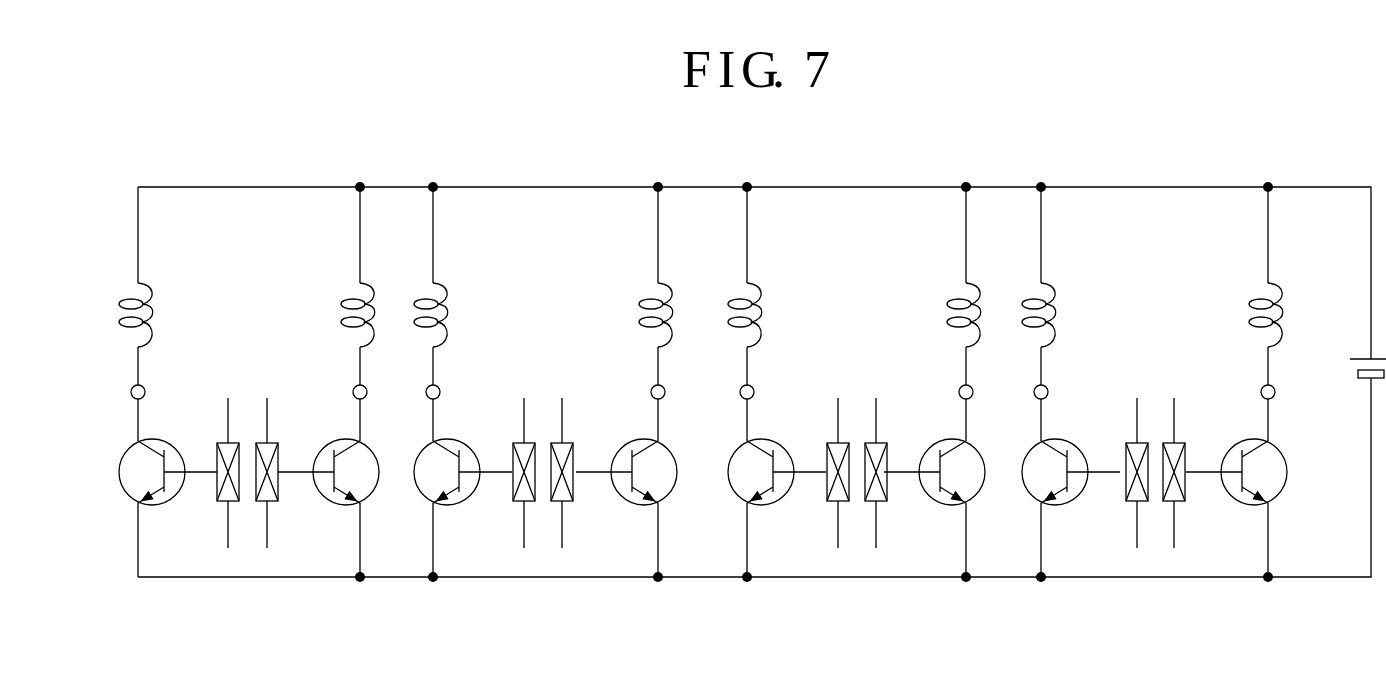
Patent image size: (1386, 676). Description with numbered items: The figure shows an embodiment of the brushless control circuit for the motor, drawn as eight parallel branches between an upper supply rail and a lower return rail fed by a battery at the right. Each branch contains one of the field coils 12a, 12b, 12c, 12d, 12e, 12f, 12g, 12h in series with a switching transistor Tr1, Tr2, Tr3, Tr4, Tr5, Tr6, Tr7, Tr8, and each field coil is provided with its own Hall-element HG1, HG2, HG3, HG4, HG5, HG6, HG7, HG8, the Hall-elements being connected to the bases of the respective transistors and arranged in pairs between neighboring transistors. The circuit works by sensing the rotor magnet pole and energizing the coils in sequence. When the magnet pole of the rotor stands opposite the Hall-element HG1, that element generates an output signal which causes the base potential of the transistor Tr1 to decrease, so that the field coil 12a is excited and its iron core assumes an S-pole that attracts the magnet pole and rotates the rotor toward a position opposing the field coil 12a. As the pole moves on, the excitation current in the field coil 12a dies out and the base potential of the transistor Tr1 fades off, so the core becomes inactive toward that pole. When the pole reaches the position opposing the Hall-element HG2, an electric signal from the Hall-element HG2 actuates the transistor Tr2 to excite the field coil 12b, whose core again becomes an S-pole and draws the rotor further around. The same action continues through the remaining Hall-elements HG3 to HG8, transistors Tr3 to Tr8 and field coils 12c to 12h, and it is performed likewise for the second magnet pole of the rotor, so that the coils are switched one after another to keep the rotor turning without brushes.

The field coil 12a is at (164, 315).
The field coil 12b is at (328, 315).
The field coil 12c is at (459, 315).
The field coil 12d is at (625, 315).
The field coil 12e is at (771, 315).
The field coil 12f is at (933, 315).
The field coil 12g is at (1068, 315).
The field coil 12h is at (1232, 315).
The transistor Tr1 is at (157, 454).
The transistor Tr2 is at (341, 454).
The transistor Tr3 is at (452, 454).
The transistor Tr4 is at (636, 454).
The transistor Tr5 is at (764, 454).
The transistor Tr6 is at (944, 454).
The transistor Tr7 is at (1059, 454).
The transistor Tr8 is at (1246, 454).
The Hall-element HG1 is at (210, 496).
The Hall-element HG2 is at (280, 497).
The Hall-element HG3 is at (505, 496).
The Hall-element HG4 is at (562, 473).
The Hall-element HG5 is at (818, 496).
The Hall-element HG6 is at (876, 473).
The Hall-element HG7 is at (1118, 496).
The Hall-element HG8 is at (1188, 497).